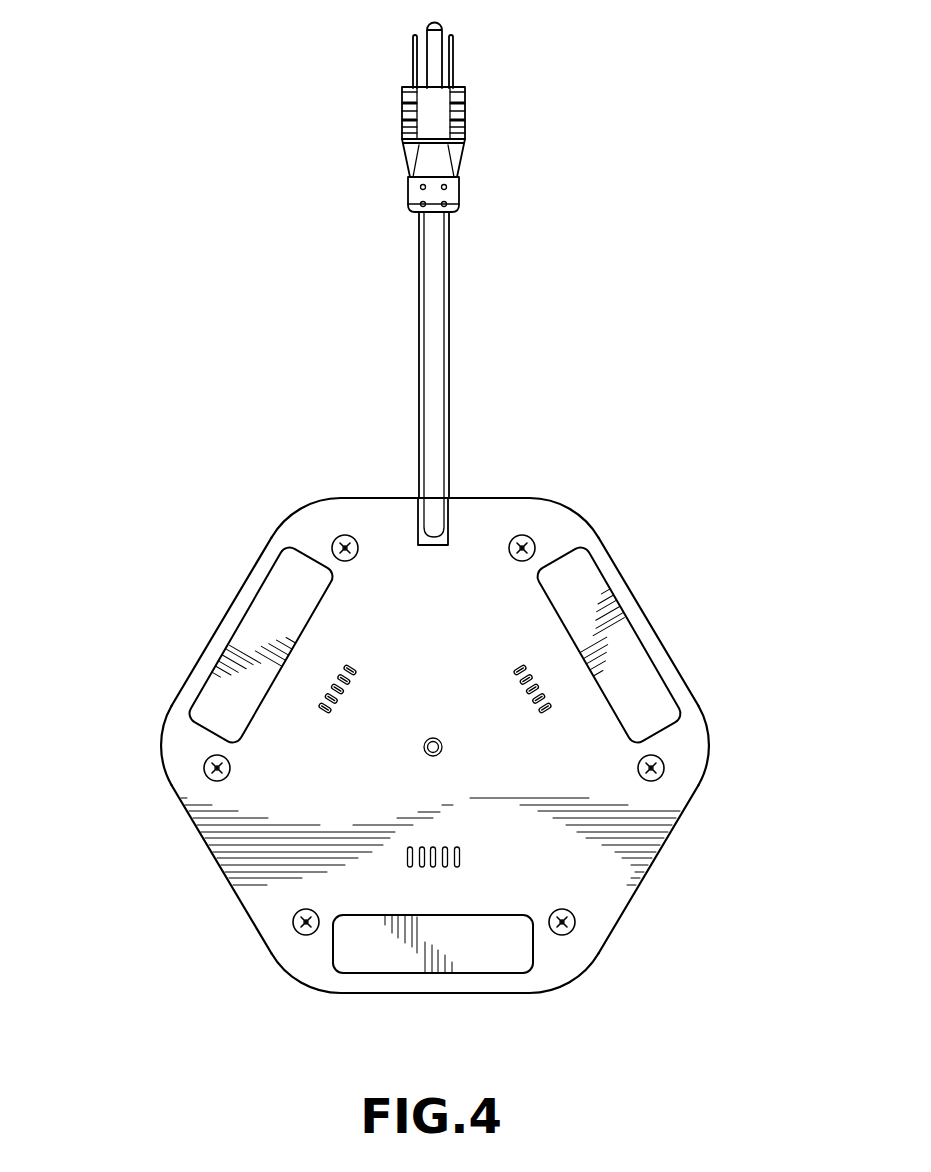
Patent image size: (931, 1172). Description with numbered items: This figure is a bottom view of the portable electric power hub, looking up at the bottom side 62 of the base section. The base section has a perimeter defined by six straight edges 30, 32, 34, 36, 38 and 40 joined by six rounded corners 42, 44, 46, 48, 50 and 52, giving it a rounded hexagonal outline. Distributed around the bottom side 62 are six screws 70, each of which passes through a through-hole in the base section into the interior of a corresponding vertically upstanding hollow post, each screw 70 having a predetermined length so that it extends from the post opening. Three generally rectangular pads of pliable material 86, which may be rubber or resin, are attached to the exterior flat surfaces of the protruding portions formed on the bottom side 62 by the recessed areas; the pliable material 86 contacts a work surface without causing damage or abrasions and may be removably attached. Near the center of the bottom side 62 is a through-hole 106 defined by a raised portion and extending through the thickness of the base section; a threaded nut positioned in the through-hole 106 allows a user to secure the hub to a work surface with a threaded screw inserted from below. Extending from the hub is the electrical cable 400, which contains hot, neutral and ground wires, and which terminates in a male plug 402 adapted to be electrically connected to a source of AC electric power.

The straight edge 30 is at (649, 625).
The straight edge 32 is at (637, 885).
The straight edge 34 is at (423, 995).
The straight edge 36 is at (228, 887).
The straight edge 38 is at (212, 632).
The straight edge 40 is at (383, 498).
The rounded corner 42 is at (563, 503).
The rounded corner 44 is at (708, 748).
The rounded corner 46 is at (570, 980).
The rounded corner 48 is at (292, 980).
The rounded corner 50 is at (162, 747).
The rounded corner 52 is at (305, 506).
The bottom side 62 is at (633, 847).
The screw 70 is at (343, 535).
The pliable material 86 is at (212, 702).
The through-hole 106 is at (433, 737).
The electrical cable 400 is at (449, 357).
The male plug 402 is at (465, 152).